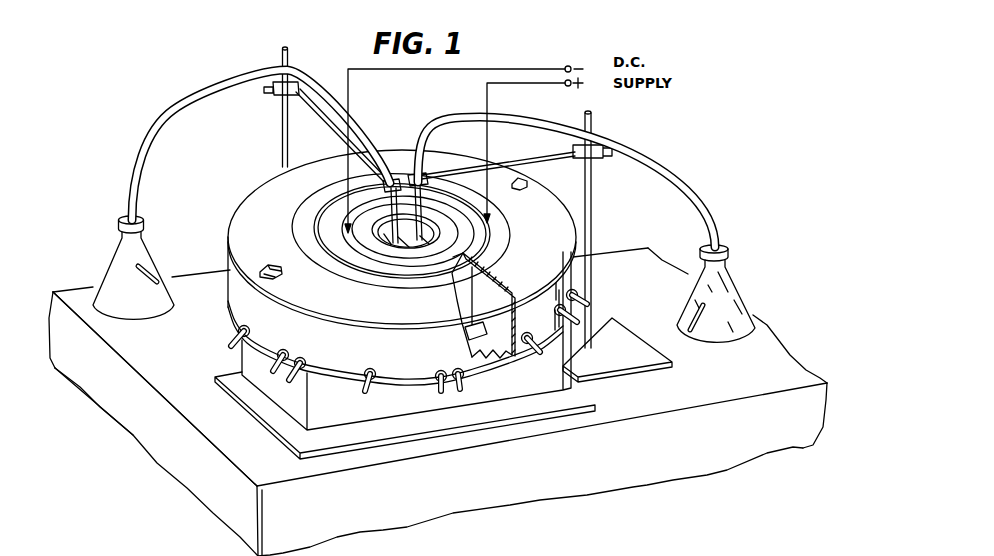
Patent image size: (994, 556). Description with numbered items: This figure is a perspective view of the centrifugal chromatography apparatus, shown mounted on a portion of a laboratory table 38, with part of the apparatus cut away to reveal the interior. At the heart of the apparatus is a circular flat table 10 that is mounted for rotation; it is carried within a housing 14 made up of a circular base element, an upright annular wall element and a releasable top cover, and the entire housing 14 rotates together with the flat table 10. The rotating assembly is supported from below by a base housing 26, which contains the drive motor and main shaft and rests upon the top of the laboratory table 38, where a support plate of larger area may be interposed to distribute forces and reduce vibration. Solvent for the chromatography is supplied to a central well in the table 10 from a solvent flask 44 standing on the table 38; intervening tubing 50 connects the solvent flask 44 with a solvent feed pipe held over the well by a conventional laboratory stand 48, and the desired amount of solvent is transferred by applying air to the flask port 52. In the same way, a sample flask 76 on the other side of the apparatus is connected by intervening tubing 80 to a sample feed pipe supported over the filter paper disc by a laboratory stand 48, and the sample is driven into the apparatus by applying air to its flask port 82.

The circular flat table 10 is at (499, 355).
The housing 14 is at (203, 317).
The base housing 26 is at (247, 365).
The laboratory table 38 is at (240, 510).
The solvent flask 44 is at (113, 277).
The laboratory stand 48 is at (284, 137).
The tubing 50 is at (136, 160).
The flask port 52 is at (156, 273).
The sample flask 76 is at (730, 300).
The tubing 80 is at (660, 163).
The flask port 82 is at (693, 312).